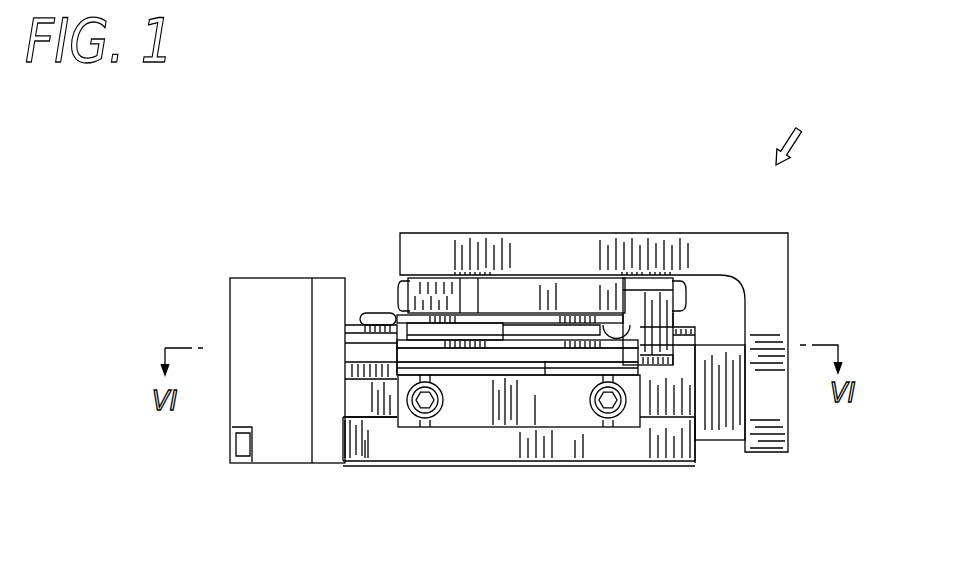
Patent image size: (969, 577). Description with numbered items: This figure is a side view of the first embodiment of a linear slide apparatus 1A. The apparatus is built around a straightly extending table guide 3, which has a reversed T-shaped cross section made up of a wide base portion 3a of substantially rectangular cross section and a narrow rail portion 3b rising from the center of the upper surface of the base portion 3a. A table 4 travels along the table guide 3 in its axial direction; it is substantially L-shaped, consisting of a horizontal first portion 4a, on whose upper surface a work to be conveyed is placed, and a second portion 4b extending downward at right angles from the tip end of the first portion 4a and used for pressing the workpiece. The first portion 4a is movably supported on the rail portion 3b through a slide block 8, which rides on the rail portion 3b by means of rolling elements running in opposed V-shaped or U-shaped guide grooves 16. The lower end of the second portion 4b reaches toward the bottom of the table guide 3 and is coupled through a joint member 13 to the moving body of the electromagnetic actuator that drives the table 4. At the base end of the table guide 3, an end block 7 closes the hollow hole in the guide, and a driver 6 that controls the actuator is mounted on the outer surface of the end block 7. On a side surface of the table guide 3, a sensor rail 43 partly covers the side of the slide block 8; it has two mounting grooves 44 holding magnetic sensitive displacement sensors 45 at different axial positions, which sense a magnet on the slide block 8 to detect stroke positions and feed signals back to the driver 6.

The linear slide apparatus 1A is at (799, 129).
The table guide 3 is at (391, 485).
The base portion 3a is at (432, 450).
The rail portion 3b is at (366, 323).
The table 4 is at (634, 229).
The first portion 4a is at (587, 258).
The second portion 4b is at (772, 278).
The driver 6 is at (258, 315).
The end block 7 is at (327, 448).
The slide block 8 is at (546, 290).
The joint member 13 is at (732, 430).
The guide grooves 16 is at (352, 352).
The sensor rail 43 is at (630, 417).
The mounting grooves 44 is at (627, 327).
The displacement sensors 45 is at (476, 332).